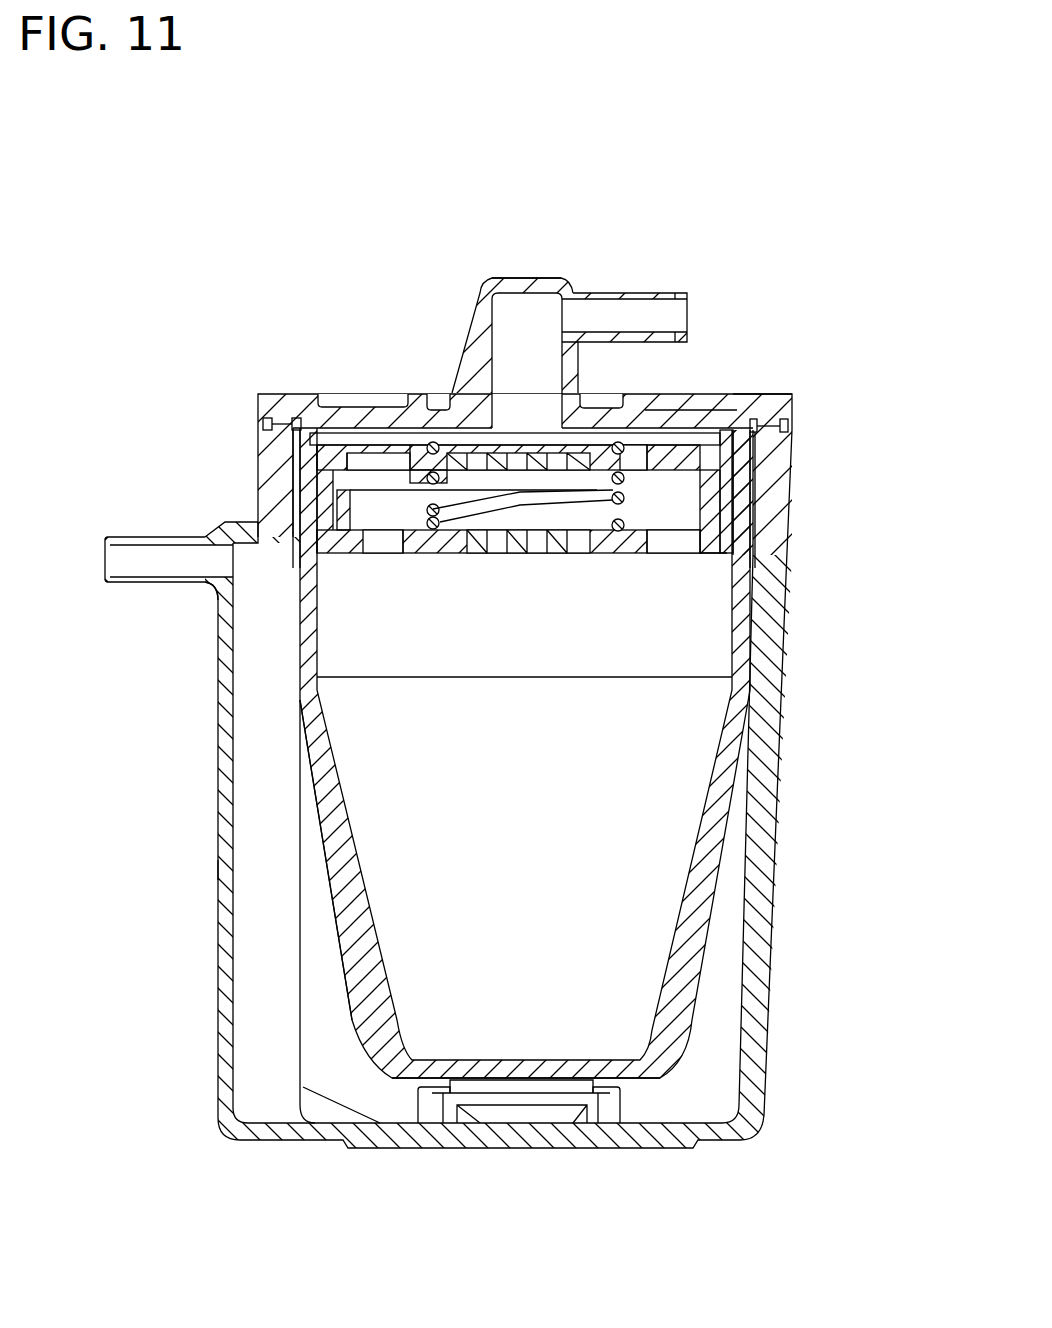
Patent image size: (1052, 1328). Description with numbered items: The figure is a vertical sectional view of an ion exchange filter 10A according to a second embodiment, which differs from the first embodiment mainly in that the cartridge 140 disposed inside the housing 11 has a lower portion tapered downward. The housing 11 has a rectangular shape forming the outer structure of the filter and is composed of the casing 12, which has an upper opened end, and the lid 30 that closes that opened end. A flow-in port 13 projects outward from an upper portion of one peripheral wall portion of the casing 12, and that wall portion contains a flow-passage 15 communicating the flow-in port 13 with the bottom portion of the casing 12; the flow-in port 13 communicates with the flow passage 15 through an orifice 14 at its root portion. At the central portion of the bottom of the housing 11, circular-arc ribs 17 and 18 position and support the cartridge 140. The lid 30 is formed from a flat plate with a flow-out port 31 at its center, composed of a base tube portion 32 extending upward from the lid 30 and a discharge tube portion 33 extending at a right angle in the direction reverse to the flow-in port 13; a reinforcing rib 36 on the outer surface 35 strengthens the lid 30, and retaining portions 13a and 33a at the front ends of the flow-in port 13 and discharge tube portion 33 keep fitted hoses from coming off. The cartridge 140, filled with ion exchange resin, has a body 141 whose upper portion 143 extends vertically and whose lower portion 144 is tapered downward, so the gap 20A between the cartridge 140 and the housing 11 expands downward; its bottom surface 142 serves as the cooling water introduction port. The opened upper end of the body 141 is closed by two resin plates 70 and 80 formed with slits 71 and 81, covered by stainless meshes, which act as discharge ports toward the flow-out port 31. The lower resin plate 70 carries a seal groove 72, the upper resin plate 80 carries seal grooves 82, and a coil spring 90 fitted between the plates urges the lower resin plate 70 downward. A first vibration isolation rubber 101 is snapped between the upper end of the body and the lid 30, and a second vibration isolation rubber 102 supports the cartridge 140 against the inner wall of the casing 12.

The ion exchange filter 10A is at (541, 190).
The housing 11 is at (219, 792).
The casing 12 is at (217, 867).
The flow-in port 13 is at (157, 537).
The retaining portion 13a is at (110, 537).
The orifice 14 is at (205, 592).
The flow-passage 15 is at (255, 928).
The circular-arc rib 17 is at (483, 1125).
The circular-arc rib 18 is at (407, 1118).
The gap 20A is at (350, 1068).
The lid 30 is at (345, 395).
The flow-out port 31 is at (549, 274).
The base tube portion 32 is at (465, 345).
The discharge tube portion 33 is at (622, 293).
The retaining portion 33a is at (687, 295).
The outer surface 35 is at (712, 395).
The reinforcing rib 36 is at (633, 395).
The resin plate 70 is at (443, 553).
The slits 71 is at (395, 555).
The seal groove 72 is at (325, 555).
The resin plate 80 is at (415, 470).
The slits 81 is at (385, 462).
The seal grooves 82 is at (722, 505).
The coil spring 90 is at (590, 500).
The first vibration isolation rubber 101 is at (303, 428).
The second vibration isolation rubber 102 is at (270, 482).
The cartridge 140 is at (734, 838).
The body 141 is at (732, 741).
The bottom surface 142 is at (648, 1088).
The upper portion 143 is at (318, 633).
The lower portion 144 is at (365, 873).